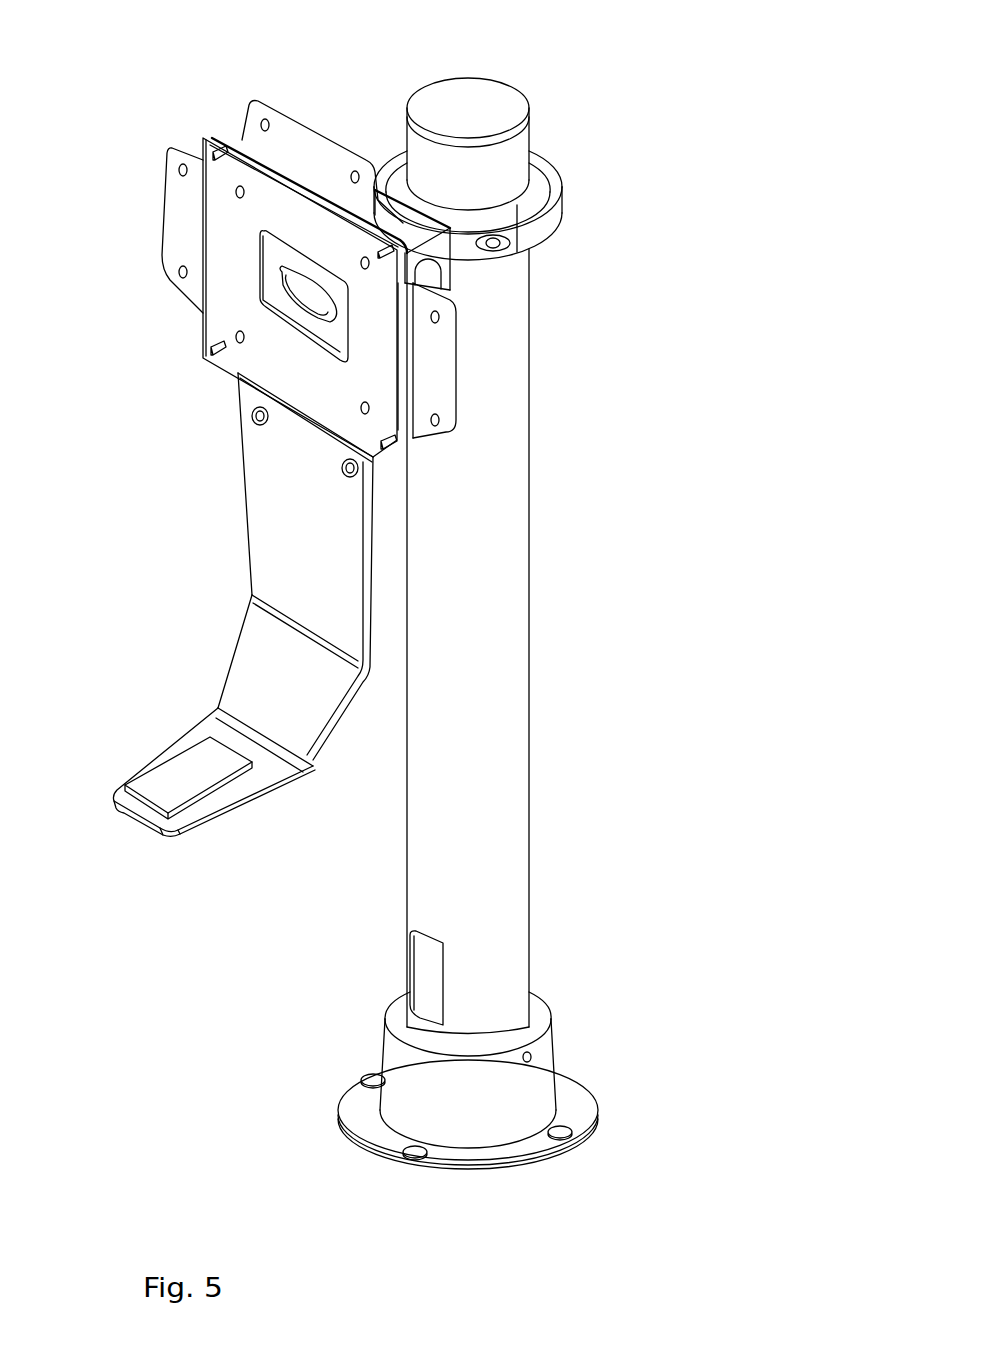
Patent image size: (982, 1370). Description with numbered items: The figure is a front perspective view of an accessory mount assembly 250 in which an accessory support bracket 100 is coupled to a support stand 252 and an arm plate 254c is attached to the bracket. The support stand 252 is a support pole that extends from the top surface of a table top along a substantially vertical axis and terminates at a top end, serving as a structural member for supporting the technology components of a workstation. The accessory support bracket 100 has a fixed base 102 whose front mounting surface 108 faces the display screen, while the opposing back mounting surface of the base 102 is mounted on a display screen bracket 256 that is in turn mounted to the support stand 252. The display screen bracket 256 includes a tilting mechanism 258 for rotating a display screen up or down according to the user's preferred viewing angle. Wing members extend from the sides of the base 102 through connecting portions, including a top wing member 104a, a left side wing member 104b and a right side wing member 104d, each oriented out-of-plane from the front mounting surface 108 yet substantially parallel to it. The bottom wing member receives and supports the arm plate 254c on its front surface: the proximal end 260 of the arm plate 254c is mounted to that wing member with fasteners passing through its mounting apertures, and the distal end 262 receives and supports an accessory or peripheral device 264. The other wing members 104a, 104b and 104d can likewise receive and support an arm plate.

The accessory support bracket 100 is at (182, 113).
The base 102 is at (230, 308).
The top wing member 104a is at (298, 152).
The left side wing member 104b is at (182, 212).
The right side wing member 104d is at (430, 385).
The front mounting surface 108 is at (230, 233).
The accessory mount assembly 250 is at (638, 63).
The support stand 252 is at (528, 553).
The arm plate 254c is at (246, 521).
The display screen bracket 256 is at (553, 214).
The tilting mechanism 258 is at (390, 223).
The proximal end 260 is at (280, 398).
The distal end 262 is at (130, 808).
The peripheral device 264 is at (186, 772).